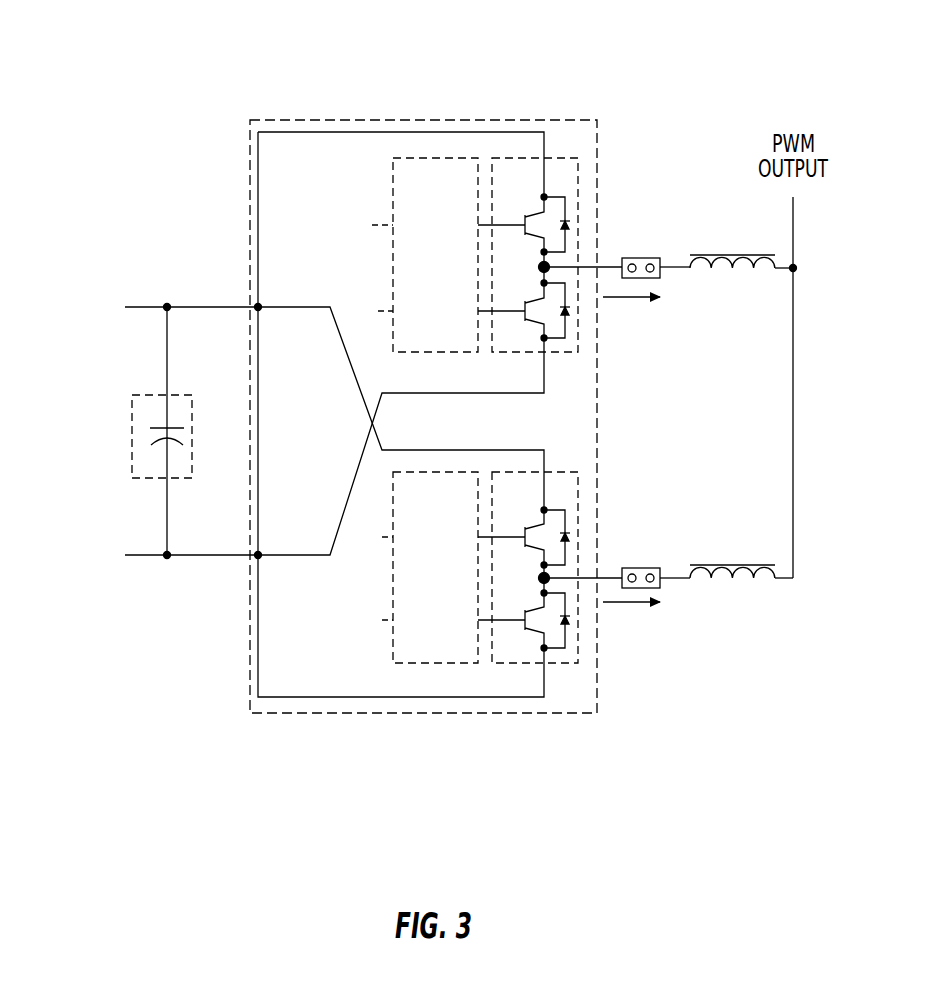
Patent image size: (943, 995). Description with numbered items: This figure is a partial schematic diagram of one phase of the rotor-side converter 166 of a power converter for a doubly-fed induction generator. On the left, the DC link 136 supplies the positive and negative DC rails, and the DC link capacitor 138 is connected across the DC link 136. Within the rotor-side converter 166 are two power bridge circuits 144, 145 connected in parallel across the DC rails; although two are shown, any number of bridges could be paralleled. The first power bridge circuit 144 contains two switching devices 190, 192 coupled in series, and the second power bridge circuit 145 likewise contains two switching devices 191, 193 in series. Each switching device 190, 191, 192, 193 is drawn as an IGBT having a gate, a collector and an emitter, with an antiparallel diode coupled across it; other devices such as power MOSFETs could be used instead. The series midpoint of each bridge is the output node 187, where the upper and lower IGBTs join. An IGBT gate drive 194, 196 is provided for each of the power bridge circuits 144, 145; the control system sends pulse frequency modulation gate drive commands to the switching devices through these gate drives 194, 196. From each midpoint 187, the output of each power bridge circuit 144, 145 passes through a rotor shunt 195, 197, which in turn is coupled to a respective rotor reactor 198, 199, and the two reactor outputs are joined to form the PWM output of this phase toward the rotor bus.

The DC link 136 is at (106, 283).
The DC link capacitor 138 is at (197, 422).
The rotor-side converter 166 is at (492, 118).
The power bridge circuit 144 is at (566, 155).
The power bridge circuit 145 is at (567, 667).
The switching device 190 is at (571, 189).
The switching device 192 is at (578, 335).
The switching device 191 is at (575, 518).
The switching device 193 is at (578, 640).
The output node 187 is at (539, 268).
The IGBT gate drive 194 is at (454, 319).
The IGBT gate drive 196 is at (454, 624).
The rotor shunt 195 is at (640, 257).
The rotor shunt 197 is at (640, 567).
The rotor reactor 198 is at (744, 276).
The rotor reactor 199 is at (731, 588).